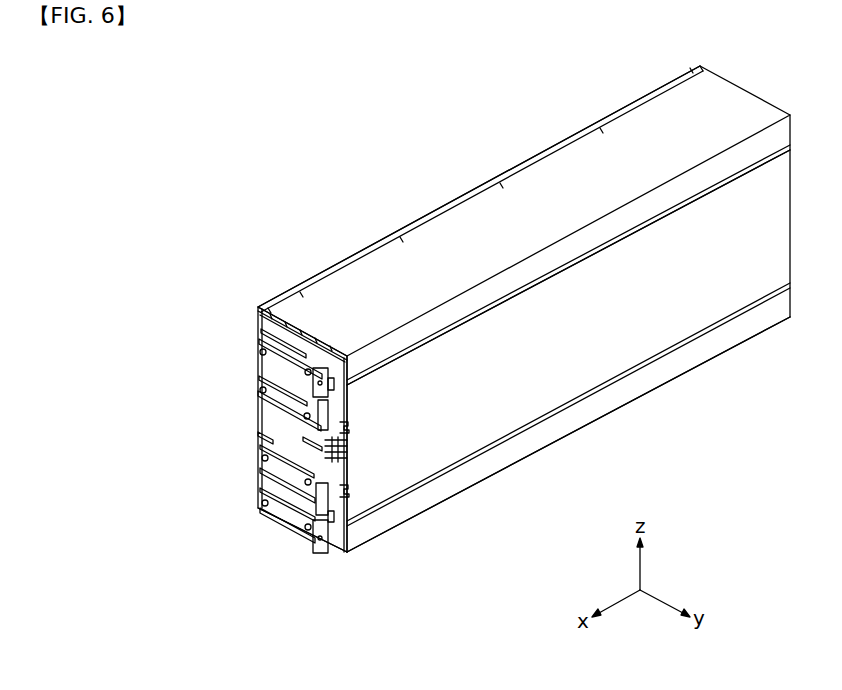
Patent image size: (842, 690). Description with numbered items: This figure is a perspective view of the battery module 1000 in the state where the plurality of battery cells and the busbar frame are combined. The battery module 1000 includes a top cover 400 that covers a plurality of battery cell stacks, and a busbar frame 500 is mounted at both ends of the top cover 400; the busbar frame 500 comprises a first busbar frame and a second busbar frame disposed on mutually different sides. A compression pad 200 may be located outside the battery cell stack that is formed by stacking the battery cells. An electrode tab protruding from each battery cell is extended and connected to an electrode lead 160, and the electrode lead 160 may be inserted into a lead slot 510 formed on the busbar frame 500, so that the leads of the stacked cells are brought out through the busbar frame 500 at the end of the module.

The battery module 1000 is at (438, 178).
The compression pad 200 is at (574, 160).
The top cover 400 is at (587, 365).
The busbar frame 500 is at (256, 430).
The lead slot 510 is at (262, 474).
The electrode lead 160 is at (282, 519).